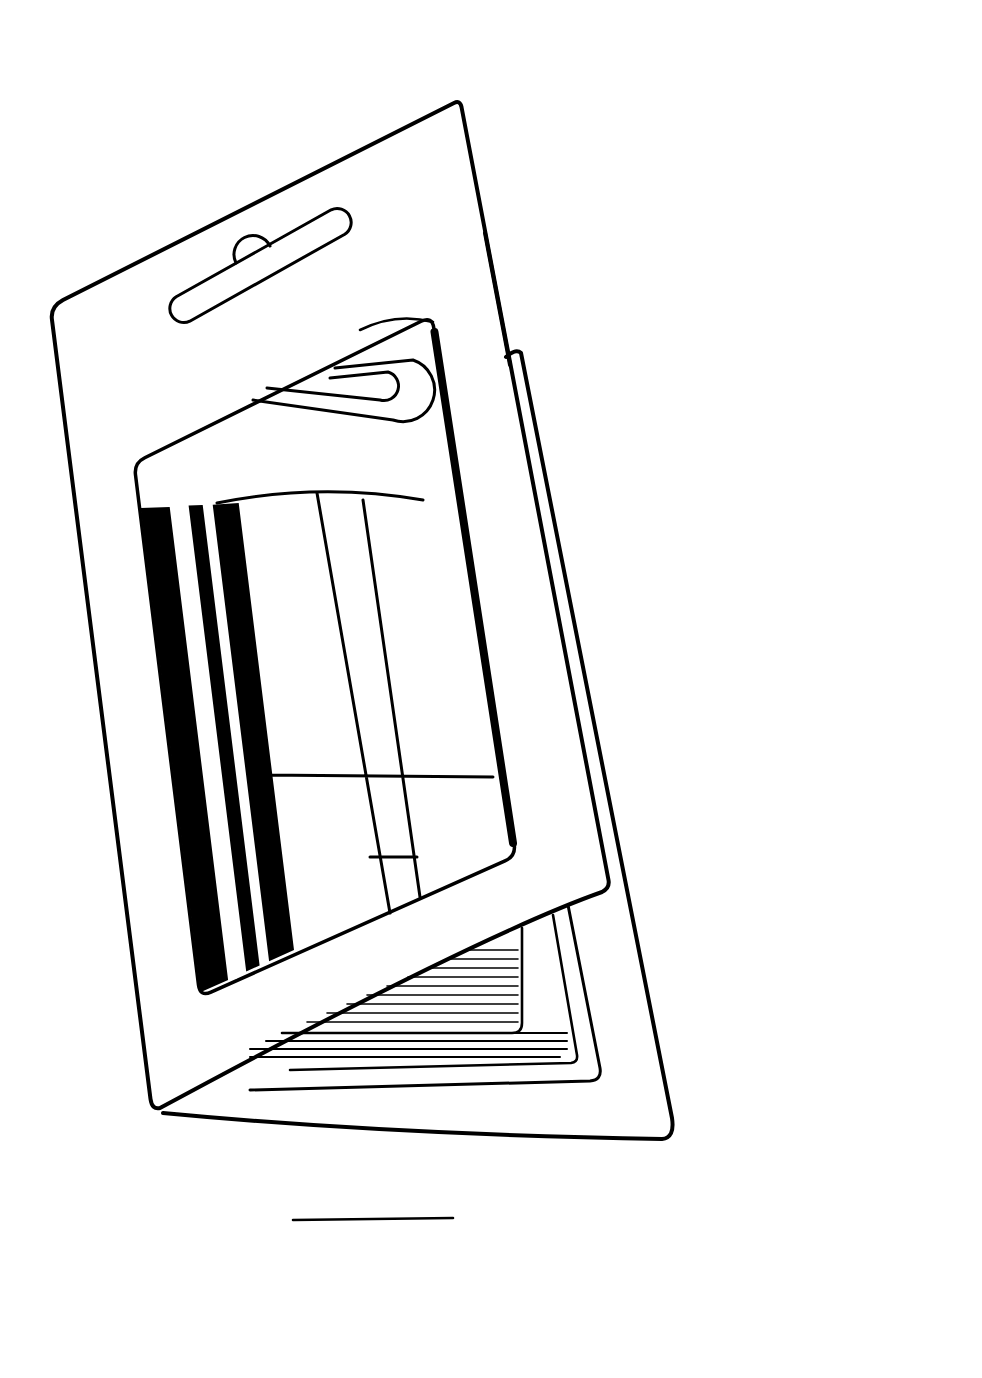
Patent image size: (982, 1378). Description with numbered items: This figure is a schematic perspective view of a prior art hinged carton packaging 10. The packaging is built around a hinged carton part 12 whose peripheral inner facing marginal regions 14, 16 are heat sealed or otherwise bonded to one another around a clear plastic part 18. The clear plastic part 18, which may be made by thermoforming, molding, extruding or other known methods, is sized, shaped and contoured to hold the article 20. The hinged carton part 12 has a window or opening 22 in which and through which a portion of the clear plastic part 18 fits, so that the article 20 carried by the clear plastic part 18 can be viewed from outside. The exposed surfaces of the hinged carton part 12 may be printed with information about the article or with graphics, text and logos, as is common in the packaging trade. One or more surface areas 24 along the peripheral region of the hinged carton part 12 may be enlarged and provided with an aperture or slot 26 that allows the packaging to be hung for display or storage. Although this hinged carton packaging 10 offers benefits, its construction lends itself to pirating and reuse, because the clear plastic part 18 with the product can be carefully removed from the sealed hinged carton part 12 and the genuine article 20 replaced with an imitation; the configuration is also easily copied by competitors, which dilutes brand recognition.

The hinged carton packaging 10 is at (599, 118).
The hinged carton part 12 is at (409, 134).
The peripheral inner facing marginal region 14 is at (630, 1047).
The peripheral inner facing marginal region 16 is at (497, 283).
The clear plastic part 18 is at (573, 967).
The article 20 is at (429, 619).
The window or opening 22 is at (423, 415).
The surface area 24 is at (140, 343).
The aperture or slot 26 is at (253, 253).